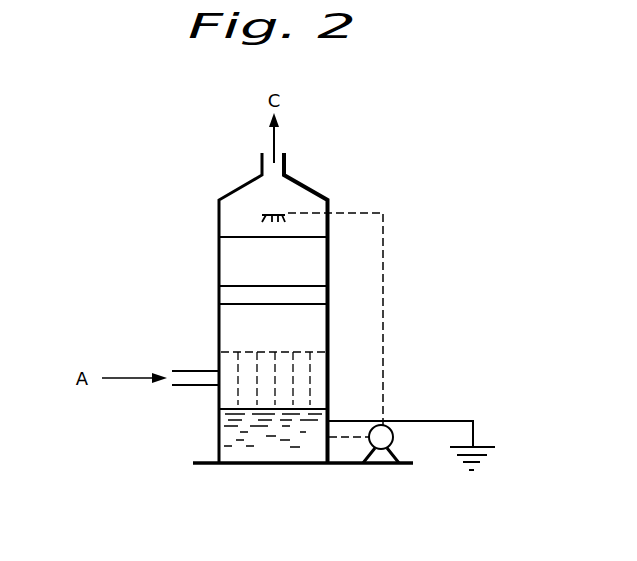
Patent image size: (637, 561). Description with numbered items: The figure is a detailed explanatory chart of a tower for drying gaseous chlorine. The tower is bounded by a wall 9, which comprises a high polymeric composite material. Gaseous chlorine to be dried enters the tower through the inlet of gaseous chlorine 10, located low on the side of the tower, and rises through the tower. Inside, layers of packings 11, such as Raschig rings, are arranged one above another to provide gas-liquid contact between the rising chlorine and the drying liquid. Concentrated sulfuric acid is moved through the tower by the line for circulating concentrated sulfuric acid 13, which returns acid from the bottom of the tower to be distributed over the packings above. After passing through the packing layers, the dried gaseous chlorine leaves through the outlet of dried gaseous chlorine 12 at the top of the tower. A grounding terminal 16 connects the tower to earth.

The wall of the tower 9 is at (219, 265).
The inlet of gaseous chlorine 10 is at (197, 371).
The layers of packings 11 is at (312, 324).
The outlet of dried gaseous chlorine 12 is at (284, 153).
The line for circulating concentrated sulfuric acid 13 is at (383, 345).
The grounding terminal 16 is at (422, 421).